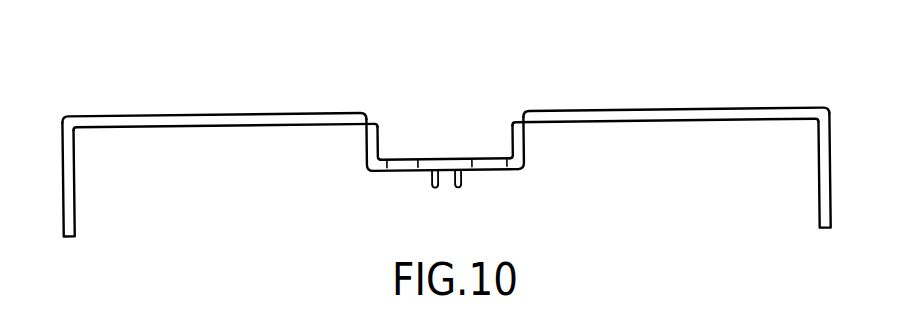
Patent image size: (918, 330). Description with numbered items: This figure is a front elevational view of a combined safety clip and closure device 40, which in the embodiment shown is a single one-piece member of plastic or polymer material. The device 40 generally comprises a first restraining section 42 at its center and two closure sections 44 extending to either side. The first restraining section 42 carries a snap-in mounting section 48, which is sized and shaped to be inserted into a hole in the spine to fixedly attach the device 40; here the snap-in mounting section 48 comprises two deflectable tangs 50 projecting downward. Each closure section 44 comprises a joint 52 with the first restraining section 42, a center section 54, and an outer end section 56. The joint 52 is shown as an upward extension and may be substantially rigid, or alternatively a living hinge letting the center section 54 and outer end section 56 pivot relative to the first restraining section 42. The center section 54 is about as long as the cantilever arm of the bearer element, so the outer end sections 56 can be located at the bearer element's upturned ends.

The combined safety clip and closure device 40 is at (118, 33).
The first restraining section 42 is at (423, 158).
The closure section 44 is at (180, 113).
The snap-in mounting section 48 is at (430, 180).
The deflectable tang 50 is at (458, 188).
The joint 52 is at (381, 128).
The center section 54 is at (230, 126).
The outer end section 56 is at (76, 205).